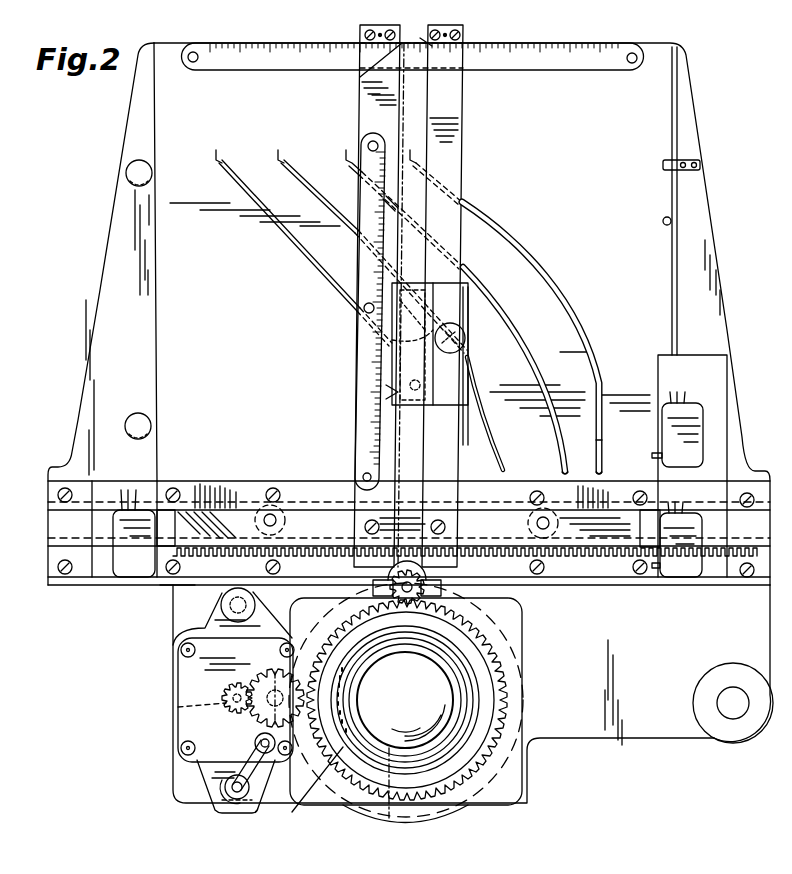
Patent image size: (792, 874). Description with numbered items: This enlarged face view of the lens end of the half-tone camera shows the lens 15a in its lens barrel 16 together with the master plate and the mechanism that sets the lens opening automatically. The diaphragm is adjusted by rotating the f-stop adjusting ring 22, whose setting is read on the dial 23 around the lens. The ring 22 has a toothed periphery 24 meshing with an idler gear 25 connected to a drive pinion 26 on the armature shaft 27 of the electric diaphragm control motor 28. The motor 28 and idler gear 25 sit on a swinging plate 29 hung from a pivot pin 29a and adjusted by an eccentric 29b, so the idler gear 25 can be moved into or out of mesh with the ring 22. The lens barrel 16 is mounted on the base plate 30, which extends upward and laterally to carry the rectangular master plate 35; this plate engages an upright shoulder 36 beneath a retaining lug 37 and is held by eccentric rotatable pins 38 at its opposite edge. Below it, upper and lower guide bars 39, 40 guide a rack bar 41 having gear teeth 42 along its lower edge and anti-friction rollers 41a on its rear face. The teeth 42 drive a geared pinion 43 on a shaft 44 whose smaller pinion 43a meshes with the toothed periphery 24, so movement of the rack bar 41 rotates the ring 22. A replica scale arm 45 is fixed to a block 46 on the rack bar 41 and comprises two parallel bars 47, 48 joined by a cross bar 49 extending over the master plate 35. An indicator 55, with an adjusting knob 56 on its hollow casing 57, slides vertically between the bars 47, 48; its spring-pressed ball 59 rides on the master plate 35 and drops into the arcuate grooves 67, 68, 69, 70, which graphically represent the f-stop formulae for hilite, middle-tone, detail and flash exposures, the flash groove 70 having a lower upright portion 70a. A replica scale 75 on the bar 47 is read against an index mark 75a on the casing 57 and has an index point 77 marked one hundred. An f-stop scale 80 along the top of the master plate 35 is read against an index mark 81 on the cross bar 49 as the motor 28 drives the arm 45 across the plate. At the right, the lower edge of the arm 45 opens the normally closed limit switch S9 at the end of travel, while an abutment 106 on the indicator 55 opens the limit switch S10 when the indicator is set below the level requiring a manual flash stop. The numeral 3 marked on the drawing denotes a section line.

The camera body 3 is at (360, 26).
The lens 15a is at (433, 730).
The lens barrel 16 is at (470, 706).
The f-stop adjusting ring 22 is at (494, 676).
The dial 23 is at (306, 789).
The toothed periphery 24 is at (510, 644).
The idler gear 25 is at (266, 673).
The drive pinion 26 is at (178, 707).
The armature shaft 27 is at (228, 704).
The electric diaphragm control motor 28 is at (192, 678).
The swinging plate 29 is at (226, 768).
The pivot pin 29a is at (221, 608).
The eccentric 29b is at (218, 802).
The base plate 30 is at (670, 737).
The master plate 35 is at (142, 244).
The upright shoulder 36 is at (671, 222).
The retaining lug 37 is at (700, 163).
The eccentric rotatable pins 38 is at (126, 173).
The upper guide bar 39 is at (190, 488).
The lower guide bar 40 is at (173, 586).
The rack bar 41 is at (206, 520).
The anti-friction rollers 41a is at (270, 506).
The gear teeth 42 is at (212, 562).
The geared pinion 43 is at (442, 590).
The smaller geared pinion 43a is at (373, 589).
The shaft 44 is at (426, 584).
The replica scale arm 45 is at (473, 161).
The block 46 is at (372, 520).
The upright bar 47 is at (362, 102).
The upright bar 48 is at (447, 217).
The cross bar 49 is at (430, 42).
The indicator 55 is at (462, 268).
The adjusting knob 56 is at (465, 339).
The hollow casing 57 is at (469, 366).
The spring-pressed ball 59 is at (418, 386).
The arcuate groove 67 is at (285, 230).
The arcuate groove 68 is at (354, 226).
The arcuate groove 69 is at (534, 368).
The arcuate groove 70 is at (568, 316).
The lower upright portion of flash groove 70a is at (600, 442).
The replica scale 75 is at (356, 333).
The index mark 75a is at (394, 390).
The index point 77 is at (364, 284).
The f-stop scale 80 is at (262, 50).
The index mark 81 is at (360, 78).
The abutment 106 is at (470, 433).
The limit switch S9 is at (688, 578).
The manual flash stop limit switch S10 is at (695, 415).